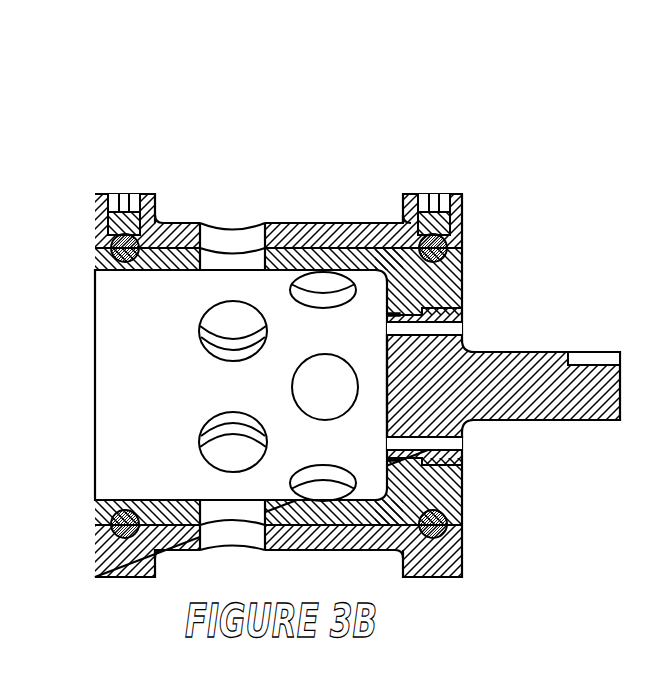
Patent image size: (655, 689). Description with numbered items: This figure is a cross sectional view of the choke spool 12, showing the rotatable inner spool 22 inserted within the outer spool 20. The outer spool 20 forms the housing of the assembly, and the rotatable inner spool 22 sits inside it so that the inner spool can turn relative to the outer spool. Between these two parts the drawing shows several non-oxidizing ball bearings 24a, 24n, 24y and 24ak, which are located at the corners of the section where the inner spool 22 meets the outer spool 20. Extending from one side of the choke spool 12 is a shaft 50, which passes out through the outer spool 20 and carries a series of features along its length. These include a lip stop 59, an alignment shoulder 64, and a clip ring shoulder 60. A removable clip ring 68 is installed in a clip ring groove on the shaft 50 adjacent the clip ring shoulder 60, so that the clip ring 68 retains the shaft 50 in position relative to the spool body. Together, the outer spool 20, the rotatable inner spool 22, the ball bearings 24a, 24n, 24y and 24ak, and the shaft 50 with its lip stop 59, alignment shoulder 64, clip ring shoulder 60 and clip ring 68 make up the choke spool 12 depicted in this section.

The choke spool 12 is at (339, 322).
The outer spool 20 is at (346, 240).
The rotatable inner spool 22 is at (283, 252).
The non-oxidizing ball bearing 24a is at (123, 250).
The non-oxidizing ball bearing 24y is at (437, 252).
The non-oxidizing ball bearing 24n is at (120, 522).
The non-oxidizing ball bearing 24ak is at (437, 524).
The shaft 50 is at (483, 392).
The lip stop 59 is at (452, 461).
The clip ring shoulder 60 is at (420, 463).
The alignment shoulder 64 is at (438, 313).
The removable clip ring 68 is at (405, 313).